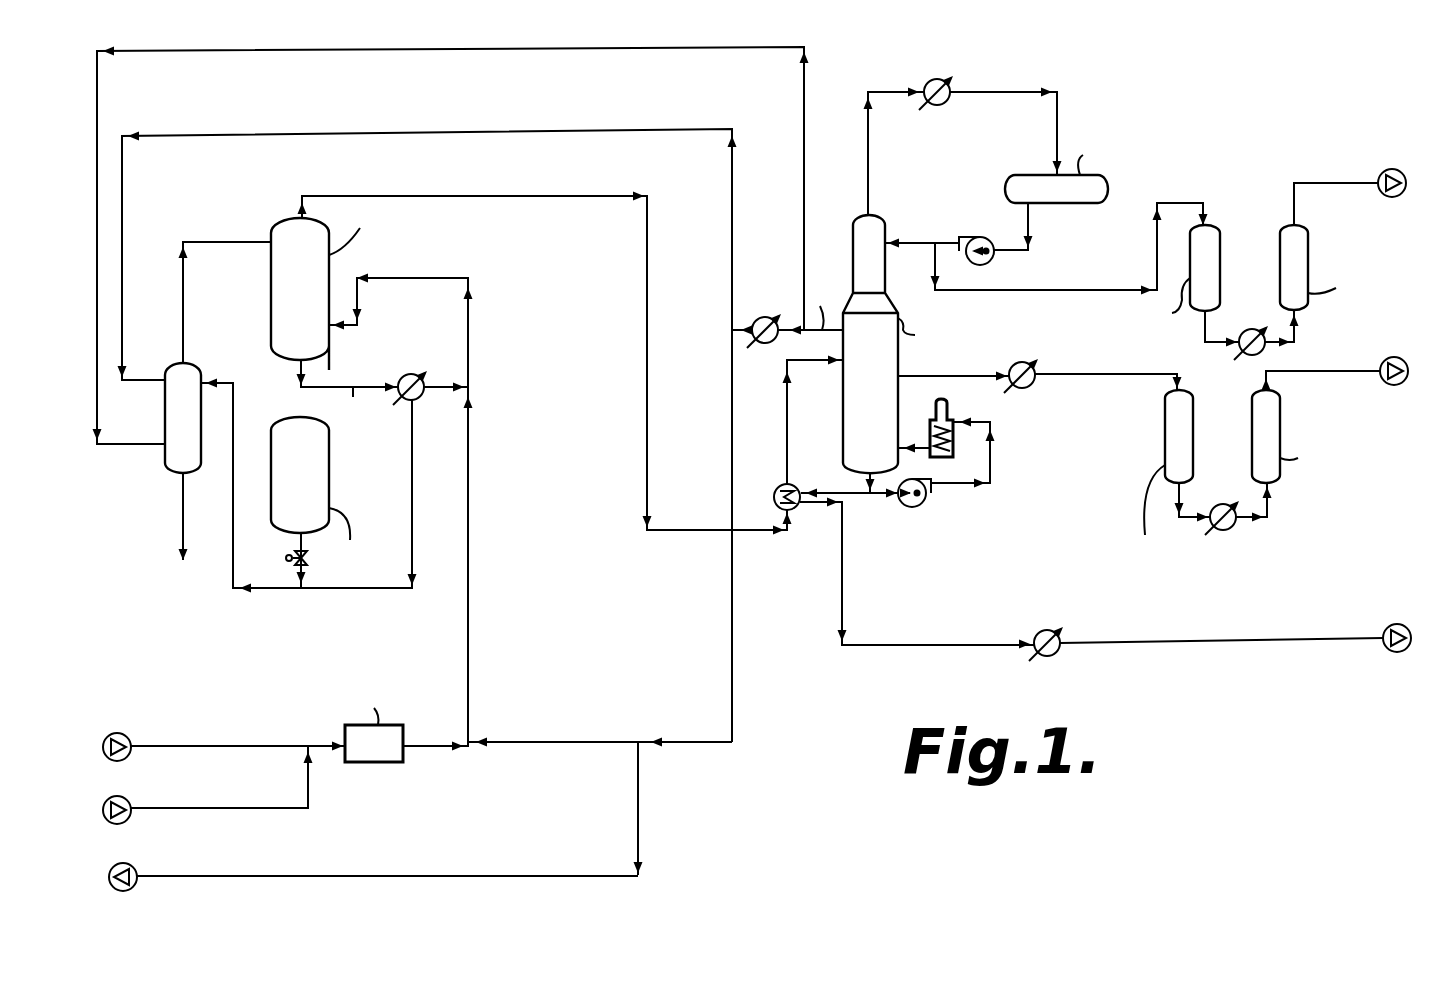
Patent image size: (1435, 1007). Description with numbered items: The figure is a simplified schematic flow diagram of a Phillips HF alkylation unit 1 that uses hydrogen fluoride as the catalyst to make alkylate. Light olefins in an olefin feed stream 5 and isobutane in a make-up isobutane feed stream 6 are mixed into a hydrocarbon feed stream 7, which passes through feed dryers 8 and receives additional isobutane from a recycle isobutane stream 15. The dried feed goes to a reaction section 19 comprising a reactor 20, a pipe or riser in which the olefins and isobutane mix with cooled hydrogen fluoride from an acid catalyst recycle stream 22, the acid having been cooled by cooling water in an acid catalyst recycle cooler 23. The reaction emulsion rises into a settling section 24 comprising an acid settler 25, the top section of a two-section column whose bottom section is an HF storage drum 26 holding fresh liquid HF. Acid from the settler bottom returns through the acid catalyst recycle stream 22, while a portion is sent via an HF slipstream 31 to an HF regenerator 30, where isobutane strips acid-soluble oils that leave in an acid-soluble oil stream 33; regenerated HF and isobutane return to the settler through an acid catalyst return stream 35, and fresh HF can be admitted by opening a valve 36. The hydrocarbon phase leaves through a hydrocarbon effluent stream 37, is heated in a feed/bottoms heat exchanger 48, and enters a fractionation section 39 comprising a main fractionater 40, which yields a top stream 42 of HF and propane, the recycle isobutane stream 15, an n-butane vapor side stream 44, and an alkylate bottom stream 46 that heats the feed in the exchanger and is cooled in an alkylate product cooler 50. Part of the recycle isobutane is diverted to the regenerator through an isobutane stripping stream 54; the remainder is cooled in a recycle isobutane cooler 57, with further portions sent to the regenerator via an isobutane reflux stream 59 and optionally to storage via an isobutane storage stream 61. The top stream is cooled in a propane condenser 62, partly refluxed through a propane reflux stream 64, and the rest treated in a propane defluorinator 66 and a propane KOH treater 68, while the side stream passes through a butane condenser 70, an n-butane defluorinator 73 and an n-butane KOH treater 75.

The HF alkylation unit 1 is at (781, 745).
The olefin feed stream 5 is at (178, 746).
The make-up isobutane feed stream 6 is at (282, 808).
The hydrocarbon feed stream 7 is at (320, 738).
The feed dryers 8 is at (366, 762).
The recycle isobutane stream 15 is at (548, 742).
The reaction section 19 is at (492, 274).
The reactor 20 is at (469, 325).
The acid catalyst recycle stream 22 is at (348, 396).
The acid catalyst recycle cooler 23 is at (404, 376).
The settling section 24 is at (243, 286).
The acid settler 25 is at (282, 222).
The HF storage drum 26 is at (329, 485).
The HF regenerator 30 is at (165, 422).
The HF slipstream 31 is at (412, 478).
The acid-soluble oil stream 33 is at (183, 531).
The acid catalyst return stream 35 is at (183, 325).
The valve 36 is at (284, 558).
The hydrocarbon effluent stream 37 is at (440, 193).
The fractionation section 39 is at (846, 207).
The main fractionater 40 is at (853, 266).
The top stream 42 is at (868, 162).
The vapor side stream 44 is at (913, 376).
The bottom stream 46 is at (870, 484).
The feed/bottoms heat exchanger 48 is at (774, 492).
The alkylate product cooler 50 is at (1034, 634).
The isobutane stripping stream 54 is at (804, 200).
The recycle isobutane cooler 57 is at (760, 314).
The isobutane reflux stream 59 is at (732, 237).
The isobutane storage stream 61 is at (525, 875).
The propane condenser 62 is at (924, 80).
The propane reflux stream 64 is at (921, 243).
The propane defluorinator 66 is at (1220, 240).
The propane KOH treater 68 is at (1280, 274).
The butane condenser 70 is at (1036, 382).
The n-butane defluorinator 73 is at (1193, 415).
The n-butane KOH treater 75 is at (1252, 412).